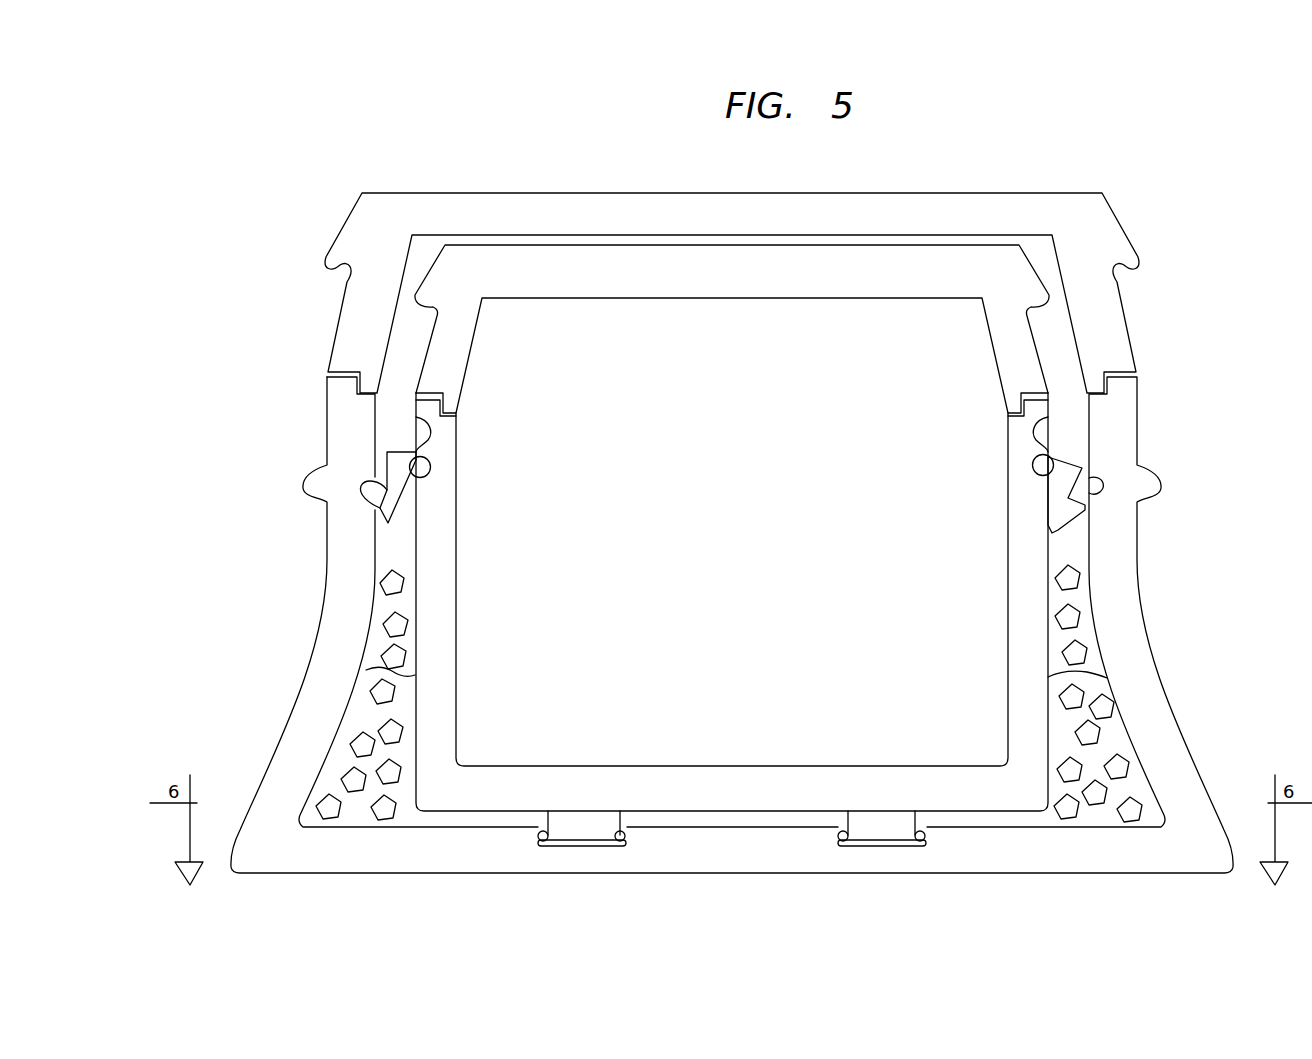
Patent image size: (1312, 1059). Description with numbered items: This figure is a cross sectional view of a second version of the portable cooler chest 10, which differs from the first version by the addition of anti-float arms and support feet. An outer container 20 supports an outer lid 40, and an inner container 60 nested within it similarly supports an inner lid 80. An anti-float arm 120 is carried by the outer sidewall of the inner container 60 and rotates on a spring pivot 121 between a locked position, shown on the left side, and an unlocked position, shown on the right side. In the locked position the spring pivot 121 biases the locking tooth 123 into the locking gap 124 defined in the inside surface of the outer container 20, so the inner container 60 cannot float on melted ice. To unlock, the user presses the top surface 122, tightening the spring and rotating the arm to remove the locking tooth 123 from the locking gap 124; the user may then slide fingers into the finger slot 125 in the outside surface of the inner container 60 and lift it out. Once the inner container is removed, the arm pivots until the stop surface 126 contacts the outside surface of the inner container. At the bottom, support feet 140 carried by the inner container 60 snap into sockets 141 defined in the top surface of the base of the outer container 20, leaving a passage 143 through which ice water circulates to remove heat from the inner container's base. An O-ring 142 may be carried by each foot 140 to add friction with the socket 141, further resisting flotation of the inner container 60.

The portable cooler chest 10 is at (340, 132).
The outer container 20 is at (1145, 580).
The outer lid 40 is at (542, 167).
The inner container 60 is at (460, 708).
The inner lid 80 is at (768, 312).
The anti-float arm 120 is at (405, 445).
The spring pivot 121 is at (420, 468).
The top surface 122 is at (1042, 477).
The locking tooth 123 is at (375, 492).
The locking gap 124 is at (1100, 493).
The finger slot 125 is at (1042, 428).
The stop surface 126 is at (416, 456).
The support foot 140 is at (580, 822).
The socket 141 is at (882, 843).
The O-ring 142 is at (848, 833).
The passage 143 is at (960, 812).